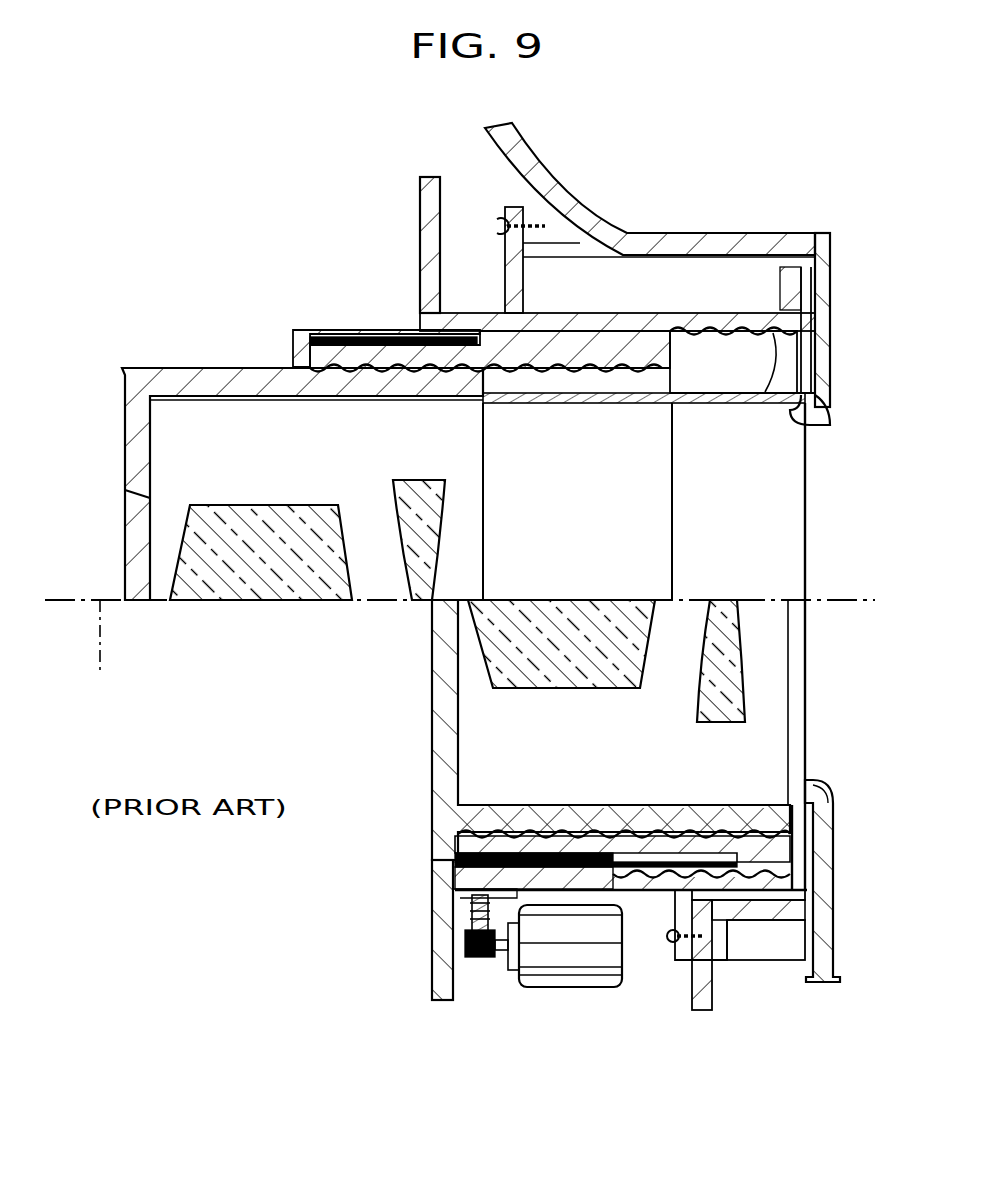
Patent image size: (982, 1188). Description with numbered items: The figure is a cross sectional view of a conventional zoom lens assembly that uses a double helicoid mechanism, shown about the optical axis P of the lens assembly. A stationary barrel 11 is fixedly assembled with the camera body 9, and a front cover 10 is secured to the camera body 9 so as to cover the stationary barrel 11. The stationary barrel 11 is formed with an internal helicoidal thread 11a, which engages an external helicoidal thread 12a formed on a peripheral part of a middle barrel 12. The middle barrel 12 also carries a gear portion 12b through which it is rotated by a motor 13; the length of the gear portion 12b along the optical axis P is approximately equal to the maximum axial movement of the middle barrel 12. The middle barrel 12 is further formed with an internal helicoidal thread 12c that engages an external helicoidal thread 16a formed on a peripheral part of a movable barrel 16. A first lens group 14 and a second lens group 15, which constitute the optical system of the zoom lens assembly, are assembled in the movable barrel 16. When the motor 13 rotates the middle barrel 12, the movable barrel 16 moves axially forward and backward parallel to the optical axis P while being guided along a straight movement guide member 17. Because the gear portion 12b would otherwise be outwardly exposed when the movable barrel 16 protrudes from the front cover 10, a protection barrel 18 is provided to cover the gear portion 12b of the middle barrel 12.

The camera body 9 is at (568, 220).
The front cover 10 is at (432, 952).
The stationary barrel 11 is at (558, 320).
The internal helicoidal thread 11a is at (767, 396).
The middle barrel 12 is at (658, 350).
The external helicoidal thread 12a is at (637, 313).
The gear portion 12b is at (355, 337).
The internal helicoidal thread 12c is at (625, 396).
The motor 13 is at (560, 988).
The first lens group 14 is at (260, 515).
The second lens group 15 is at (415, 480).
The movable barrel 16 is at (172, 368).
The external helicoidal thread 16a is at (768, 833).
The straight movement guide member 17 is at (825, 398).
The protection barrel 18 is at (293, 343).
The optical axis P is at (99, 649).